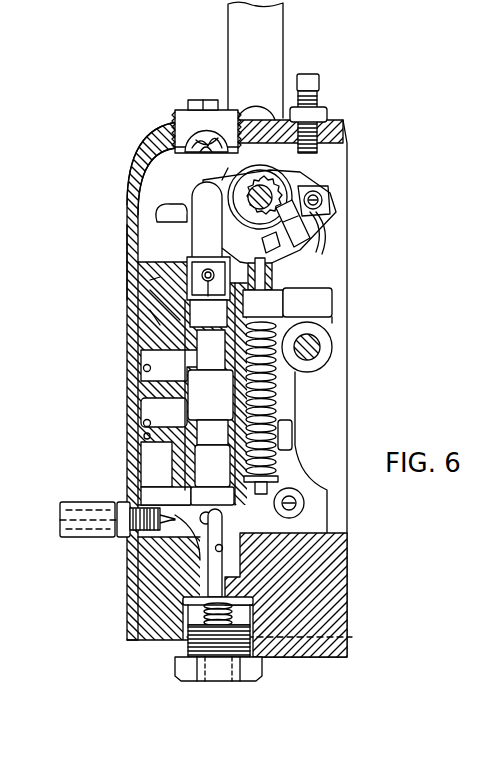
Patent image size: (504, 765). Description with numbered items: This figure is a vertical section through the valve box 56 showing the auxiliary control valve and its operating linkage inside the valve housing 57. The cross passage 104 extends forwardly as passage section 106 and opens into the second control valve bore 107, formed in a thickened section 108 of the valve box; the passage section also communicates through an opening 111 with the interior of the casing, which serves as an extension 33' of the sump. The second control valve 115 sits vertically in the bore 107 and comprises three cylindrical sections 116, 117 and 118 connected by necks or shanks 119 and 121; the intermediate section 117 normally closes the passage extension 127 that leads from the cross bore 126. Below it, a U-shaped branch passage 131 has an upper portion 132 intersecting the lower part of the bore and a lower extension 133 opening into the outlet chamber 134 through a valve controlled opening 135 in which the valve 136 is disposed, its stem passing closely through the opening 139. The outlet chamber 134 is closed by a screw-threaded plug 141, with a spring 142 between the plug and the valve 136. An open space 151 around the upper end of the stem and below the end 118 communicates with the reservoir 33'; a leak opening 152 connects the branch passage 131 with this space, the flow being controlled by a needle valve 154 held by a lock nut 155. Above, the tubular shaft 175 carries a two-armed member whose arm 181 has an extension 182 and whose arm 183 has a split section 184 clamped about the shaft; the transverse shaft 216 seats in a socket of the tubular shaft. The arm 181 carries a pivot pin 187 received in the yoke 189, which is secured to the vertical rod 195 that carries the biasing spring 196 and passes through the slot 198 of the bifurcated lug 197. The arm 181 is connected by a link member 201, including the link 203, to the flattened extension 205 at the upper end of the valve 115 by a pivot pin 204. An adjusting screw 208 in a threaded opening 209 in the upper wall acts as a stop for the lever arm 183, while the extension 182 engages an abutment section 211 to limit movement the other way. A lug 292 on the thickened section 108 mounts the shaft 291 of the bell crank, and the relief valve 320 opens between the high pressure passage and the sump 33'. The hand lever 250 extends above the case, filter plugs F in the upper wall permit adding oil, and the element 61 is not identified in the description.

The hand lever 250 is at (288, 43).
The adjusting screw 208 is at (320, 92).
The threaded opening 209 is at (343, 128).
The filter plug F is at (190, 110).
The abutment section 211 is at (150, 143).
The link member 201 is at (148, 160).
The arm 181 is at (206, 142).
The tubular shaft member 175 is at (229, 167).
The transverse shaft 216 is at (262, 184).
The arm 183 is at (300, 180).
The pivot pin 187 is at (198, 190).
The extension 182 is at (176, 209).
The split section 184 is at (308, 230).
The yoke member 189 is at (332, 243).
The valve housing 57 is at (127, 232).
The link 203 is at (207, 245).
The second control valve 115 is at (180, 267).
The thickened section 108 is at (150, 278).
The flattened extension 205 is at (190, 283).
The bifurcated lug 197 is at (285, 291).
The cylindrical section 116 is at (172, 305).
The slot 198 is at (281, 313).
The second control valve bore 107 is at (165, 318).
The pivot pin 204 is at (208, 284).
The lug 292 is at (320, 331).
The shaft 291 is at (314, 349).
The valve box 56 is at (110, 344).
The neck 119 is at (200, 351).
The cross passage 104 is at (178, 366).
The opening 111 is at (228, 371).
The passage section 106 is at (185, 396).
The biasing spring 196 is at (280, 404).
The vertical rod 195 is at (268, 411).
The cylindrical section 117 is at (205, 403).
The cross bore 126 is at (144, 432).
The passage extension 127 is at (170, 446).
The sump extension 33' is at (336, 425).
The upper portion 132 is at (212, 458).
The neck 121 is at (172, 472).
The relief valve 320 is at (291, 496).
The lock nut 155 is at (80, 508).
The branch passage 131 is at (137, 497).
The cylindrical section 118 is at (224, 498).
The opening 139 is at (223, 547).
The needle valve 154 is at (137, 533).
The leak opening 152 is at (178, 538).
The open space 151 is at (200, 524).
The valve 136 is at (210, 566).
The lower extension 133 is at (196, 594).
The valve controlled opening 135 is at (200, 609).
The outlet chamber 134 is at (195, 622).
The spring 142 is at (188, 641).
The screw-threaded plug 141 is at (216, 672).
The base block 61 is at (304, 648).